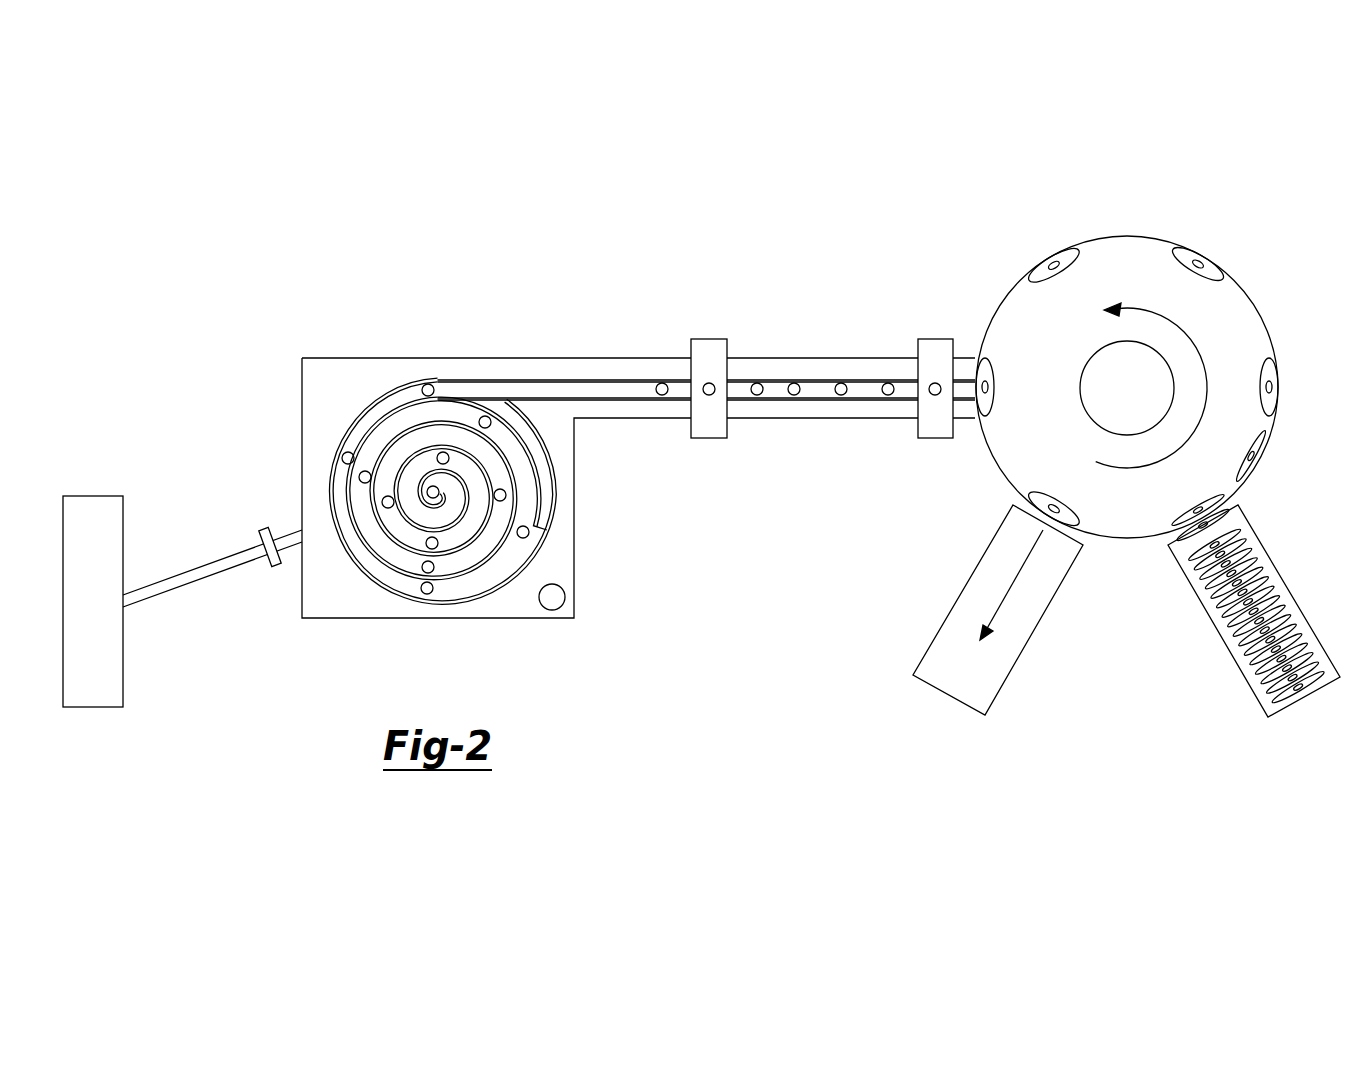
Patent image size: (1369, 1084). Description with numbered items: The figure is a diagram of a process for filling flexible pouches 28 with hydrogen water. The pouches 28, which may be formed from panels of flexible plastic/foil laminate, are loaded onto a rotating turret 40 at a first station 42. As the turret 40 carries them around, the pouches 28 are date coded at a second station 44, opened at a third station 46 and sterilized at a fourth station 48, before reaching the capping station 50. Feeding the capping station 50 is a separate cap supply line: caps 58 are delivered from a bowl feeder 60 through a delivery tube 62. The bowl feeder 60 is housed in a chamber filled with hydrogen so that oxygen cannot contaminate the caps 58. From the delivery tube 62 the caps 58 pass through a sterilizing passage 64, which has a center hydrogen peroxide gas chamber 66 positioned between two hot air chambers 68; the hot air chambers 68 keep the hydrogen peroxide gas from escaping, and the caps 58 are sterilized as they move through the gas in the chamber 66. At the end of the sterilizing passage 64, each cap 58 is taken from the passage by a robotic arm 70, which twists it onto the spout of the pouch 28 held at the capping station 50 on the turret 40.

The pouch 28 is at (1250, 680).
The turret 40 is at (1151, 380).
The first station 42 is at (1254, 611).
The second station 44 is at (1262, 462).
The third station 46 is at (1282, 388).
The fourth station 48 is at (1207, 258).
The capping station 50 is at (1046, 260).
The cap 58 is at (430, 383).
The bowl feeder 60 is at (638, 501).
The delivery tube 62 is at (606, 383).
The sterilizing passage 64 is at (519, 472).
The hydrogen peroxide gas chamber 66 is at (707, 354).
The hot air chambers 68 is at (707, 339).
The robotic arm 70 is at (977, 368).